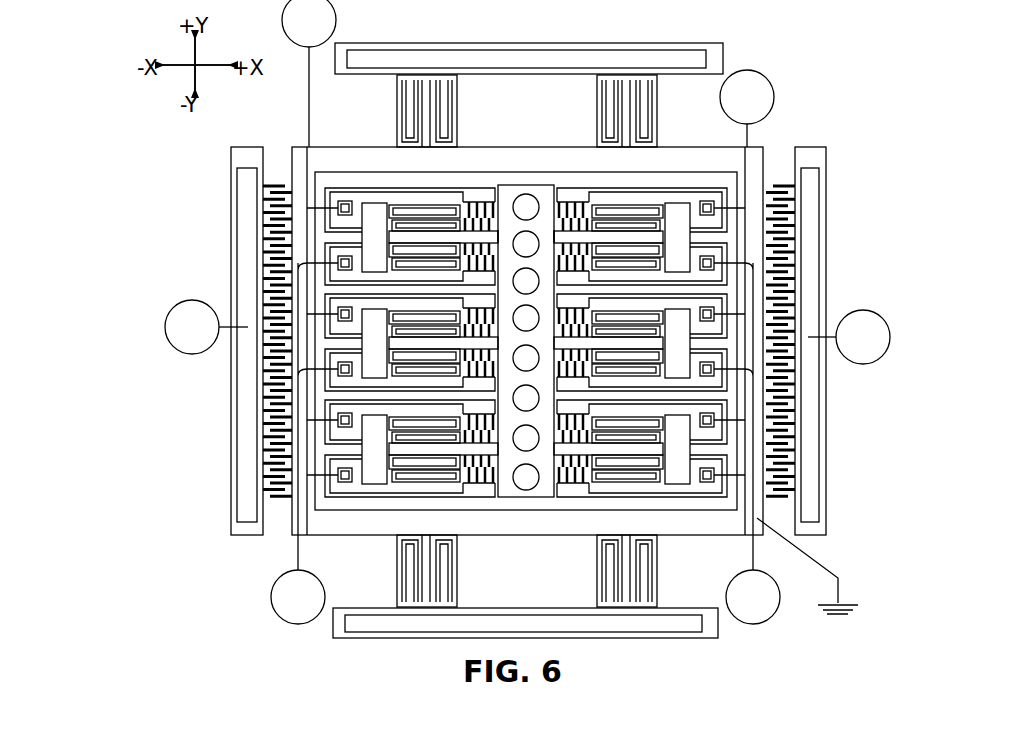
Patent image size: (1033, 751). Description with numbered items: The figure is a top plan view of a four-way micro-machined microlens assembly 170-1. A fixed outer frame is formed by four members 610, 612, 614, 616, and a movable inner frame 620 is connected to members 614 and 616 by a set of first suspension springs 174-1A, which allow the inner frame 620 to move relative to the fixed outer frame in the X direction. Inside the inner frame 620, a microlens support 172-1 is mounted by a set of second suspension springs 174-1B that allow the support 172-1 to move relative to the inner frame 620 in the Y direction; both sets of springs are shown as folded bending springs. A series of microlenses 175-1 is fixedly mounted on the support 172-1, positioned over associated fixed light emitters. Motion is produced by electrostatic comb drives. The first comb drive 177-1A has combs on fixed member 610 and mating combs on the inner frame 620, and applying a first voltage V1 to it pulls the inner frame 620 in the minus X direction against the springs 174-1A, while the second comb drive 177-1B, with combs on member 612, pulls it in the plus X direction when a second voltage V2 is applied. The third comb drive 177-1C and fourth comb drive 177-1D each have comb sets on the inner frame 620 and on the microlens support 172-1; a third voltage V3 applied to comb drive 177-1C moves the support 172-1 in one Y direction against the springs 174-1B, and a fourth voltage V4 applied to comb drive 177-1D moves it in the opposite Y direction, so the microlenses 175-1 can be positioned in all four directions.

The four-way microlens assembly 170-1 is at (857, 58).
The microlens support 172-1 is at (503, 187).
The first suspension members (springs) 174-1A is at (597, 110).
The second suspension members (springs) 174-1B is at (425, 372).
The microlenses 175-1 is at (534, 445).
The first comb drive 177-1A is at (278, 168).
The second comb drive 177-1B is at (779, 172).
The third comb drive 177-1C is at (461, 292).
The fourth comb drive 177-1D is at (552, 238).
The fixed frame member 610 is at (232, 250).
The fixed frame member 612 is at (826, 253).
The fixed frame member 614 is at (505, 43).
The fixed frame member 616 is at (377, 638).
The movable inner frame 620 is at (350, 130).
The first voltage V1 is at (206, 327).
The second voltage V2 is at (849, 337).
The third voltage V3 is at (528, 73).
The fourth voltage V4 is at (525, 443).